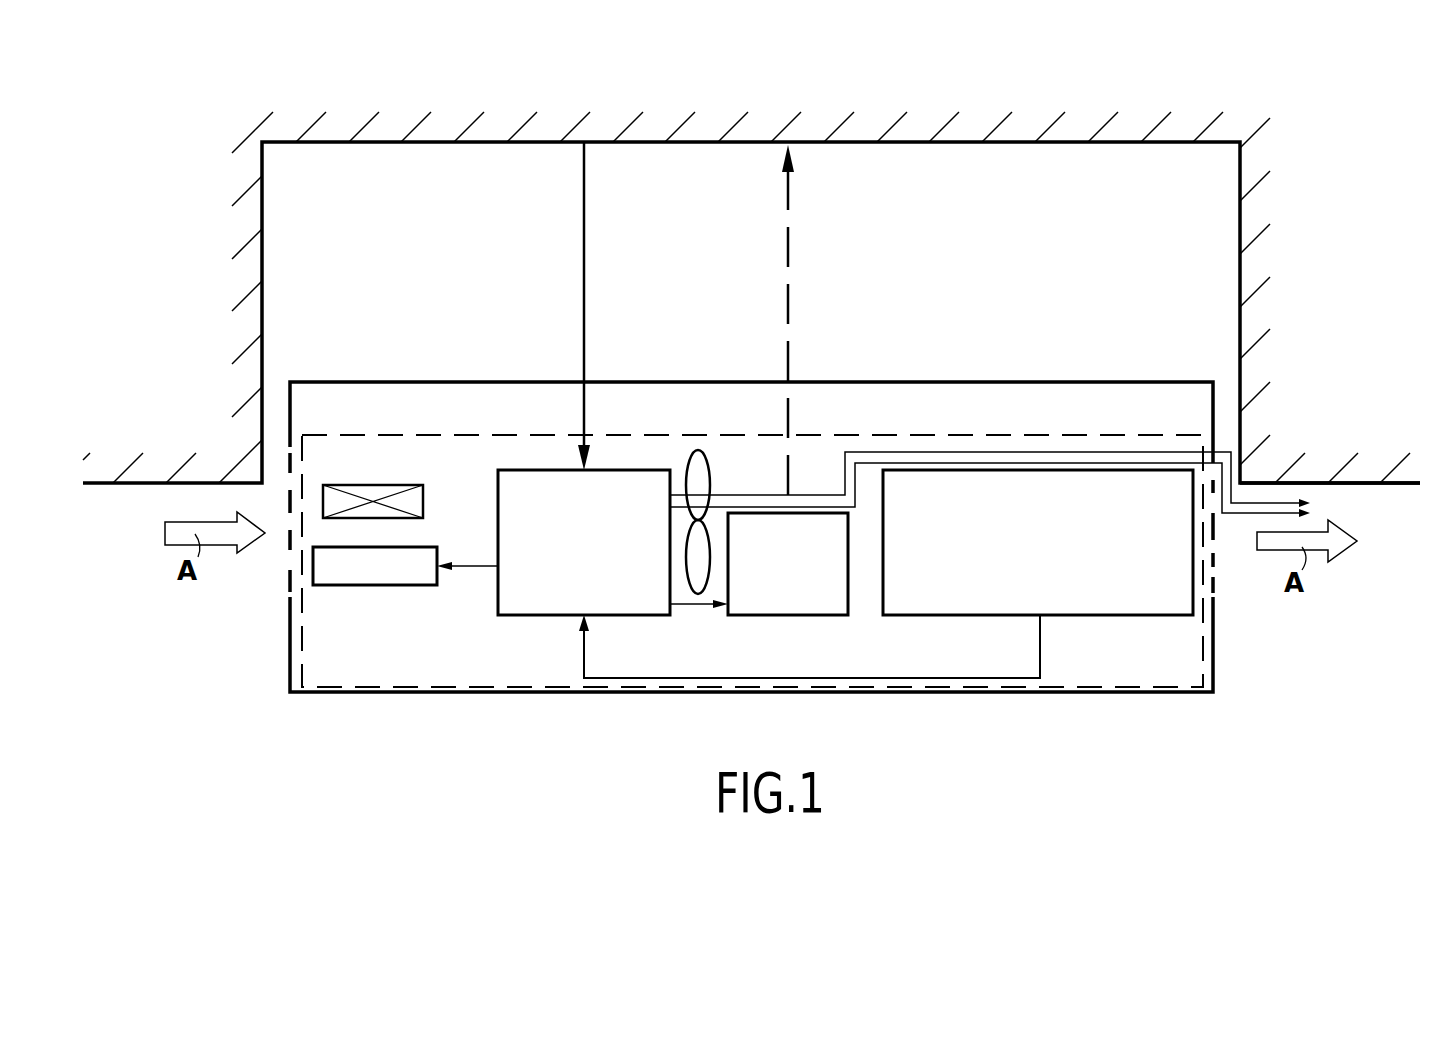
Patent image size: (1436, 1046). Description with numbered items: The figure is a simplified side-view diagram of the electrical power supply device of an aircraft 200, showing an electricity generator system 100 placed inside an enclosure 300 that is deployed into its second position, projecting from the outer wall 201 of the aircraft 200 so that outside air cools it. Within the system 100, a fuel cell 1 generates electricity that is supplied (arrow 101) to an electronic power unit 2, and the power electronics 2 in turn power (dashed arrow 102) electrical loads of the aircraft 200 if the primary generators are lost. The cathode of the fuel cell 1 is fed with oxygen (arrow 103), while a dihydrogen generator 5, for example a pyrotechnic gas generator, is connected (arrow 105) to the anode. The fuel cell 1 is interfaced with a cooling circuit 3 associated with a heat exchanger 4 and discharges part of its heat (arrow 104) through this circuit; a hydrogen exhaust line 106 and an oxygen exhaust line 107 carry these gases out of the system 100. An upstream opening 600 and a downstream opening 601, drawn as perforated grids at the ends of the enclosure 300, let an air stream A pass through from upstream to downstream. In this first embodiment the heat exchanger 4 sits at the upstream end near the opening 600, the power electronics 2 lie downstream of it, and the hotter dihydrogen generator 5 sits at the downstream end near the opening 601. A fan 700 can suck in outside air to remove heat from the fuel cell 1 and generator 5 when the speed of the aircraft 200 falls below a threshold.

The fuel cell 1 is at (571, 550).
The electronic power unit 2 is at (782, 575).
The cooling circuit 3 is at (367, 581).
The heat exchanger 4 is at (376, 492).
The dihydrogen generator 5 is at (1028, 550).
The electricity generator system 100 is at (466, 432).
The arrow 101 is at (690, 608).
The dashed arrow 102 is at (788, 298).
The arrow 103 is at (584, 302).
The arrow 104 is at (473, 562).
The arrow 105 is at (830, 678).
The hydrogen exhaust line 106 is at (1014, 453).
The oxygen exhaust line 107 is at (1127, 462).
The aircraft 200 is at (1325, 446).
The outer wall 201 is at (1399, 485).
The enclosure 300 is at (1139, 694).
The upstream opening 600 is at (290, 554).
The downstream opening 601 is at (1215, 580).
The fan 700 is at (698, 462).